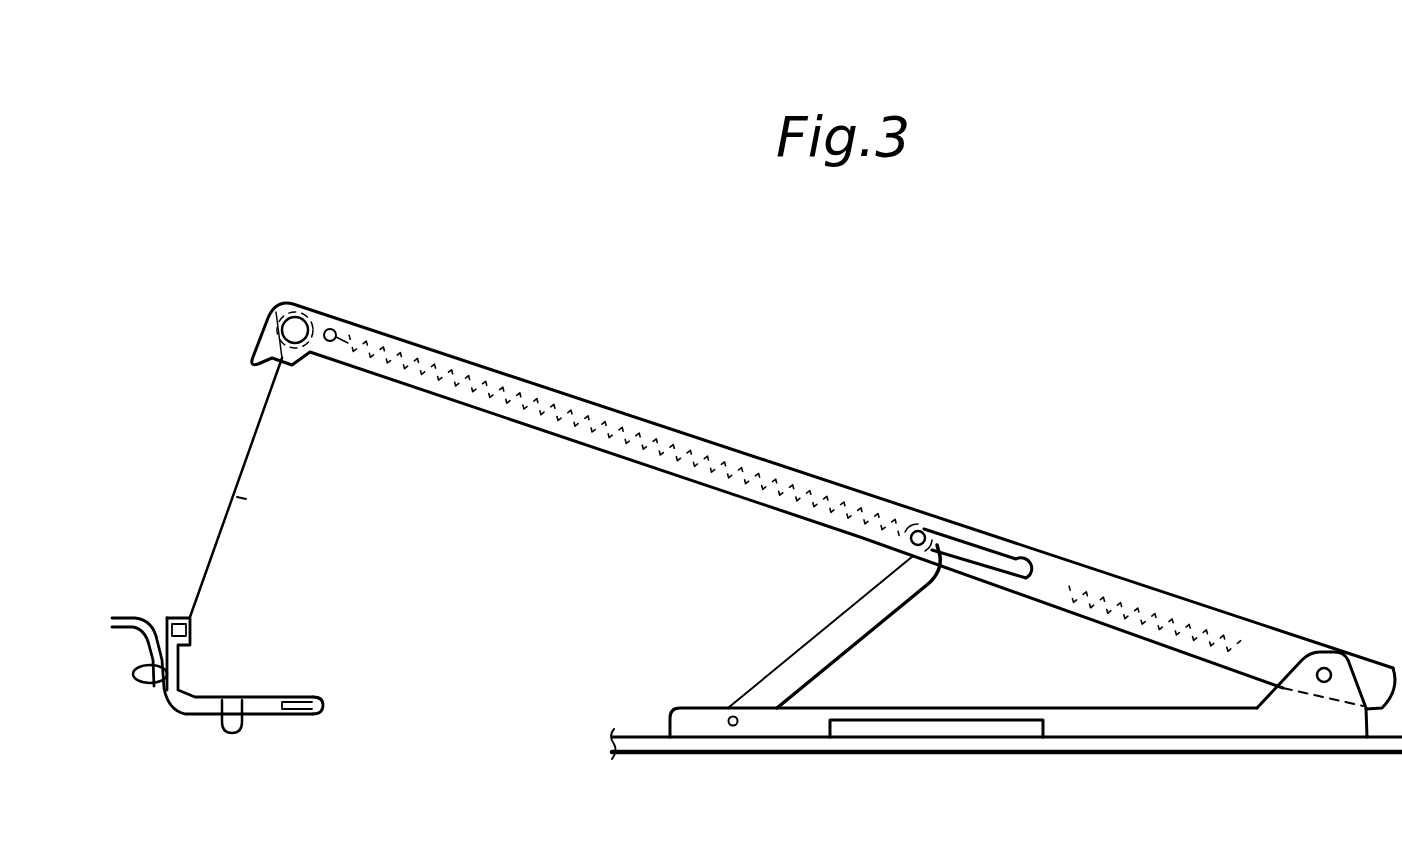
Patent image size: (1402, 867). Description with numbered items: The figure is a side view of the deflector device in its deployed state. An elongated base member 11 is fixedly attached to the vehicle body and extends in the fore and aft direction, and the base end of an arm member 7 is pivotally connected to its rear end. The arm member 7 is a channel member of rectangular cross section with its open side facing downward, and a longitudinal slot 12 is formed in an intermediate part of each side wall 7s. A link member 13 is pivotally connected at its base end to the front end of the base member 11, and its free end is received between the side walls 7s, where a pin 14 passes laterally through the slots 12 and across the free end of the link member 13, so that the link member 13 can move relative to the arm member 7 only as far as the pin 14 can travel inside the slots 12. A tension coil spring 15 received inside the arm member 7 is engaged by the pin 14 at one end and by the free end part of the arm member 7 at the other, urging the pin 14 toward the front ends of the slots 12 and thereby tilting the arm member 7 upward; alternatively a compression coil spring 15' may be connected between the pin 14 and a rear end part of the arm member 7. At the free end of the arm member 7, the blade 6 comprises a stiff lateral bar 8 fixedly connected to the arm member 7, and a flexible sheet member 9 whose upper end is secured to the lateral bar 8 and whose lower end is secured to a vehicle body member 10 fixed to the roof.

The blade 6 is at (230, 414).
The arm member 7 is at (604, 402).
The side wall 7s is at (1263, 643).
The lateral bar 8 is at (278, 314).
The flexible sheet member 9 is at (218, 546).
The vehicle body member 10 is at (182, 706).
The base member 11 is at (1162, 723).
The longitudinal slot 12 is at (1040, 570).
The link member 13 is at (808, 659).
The pin 14 is at (923, 535).
The tension coil spring 15 is at (624, 435).
The compression coil spring 15' is at (1155, 583).